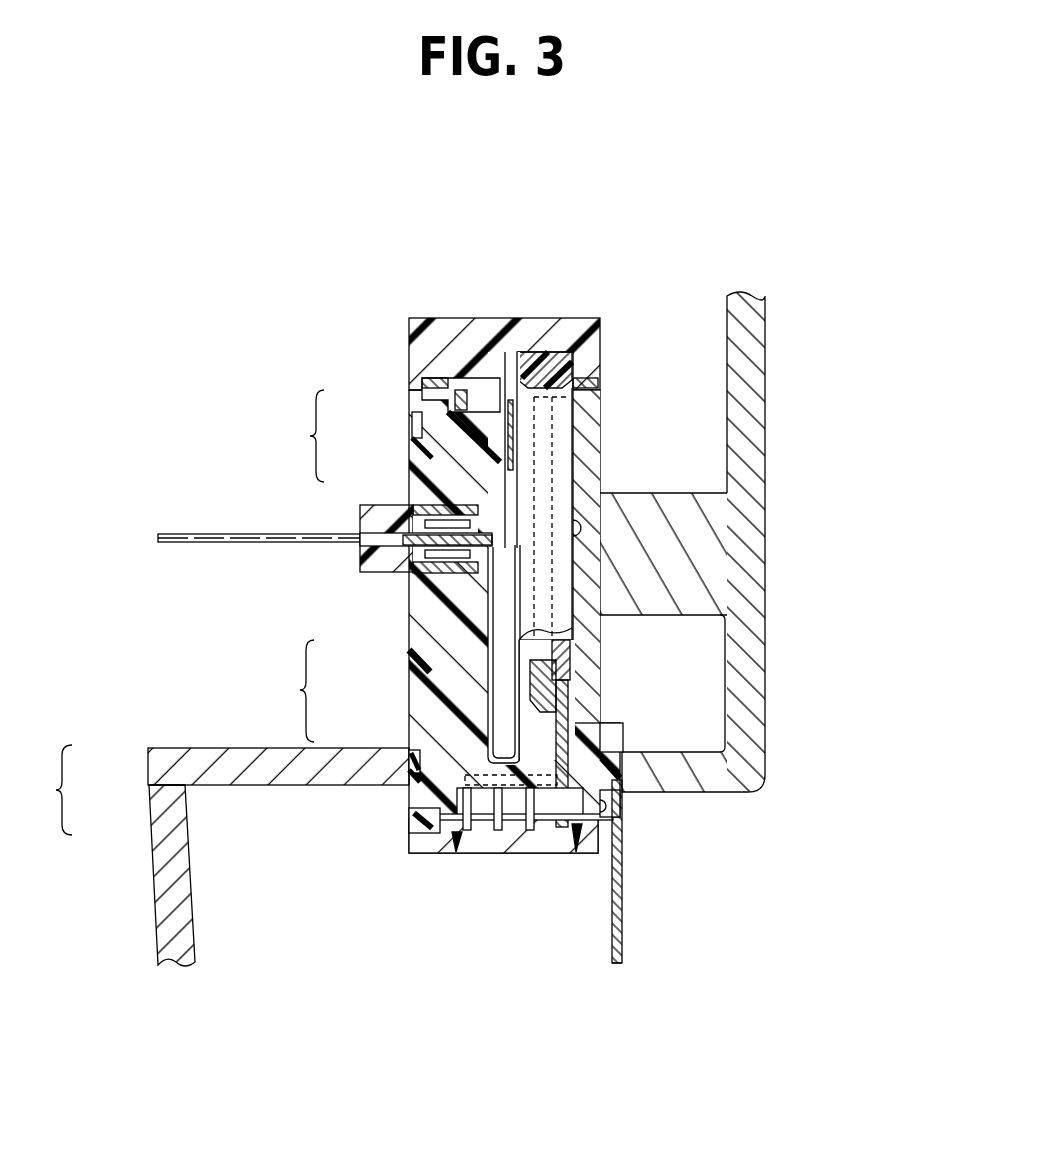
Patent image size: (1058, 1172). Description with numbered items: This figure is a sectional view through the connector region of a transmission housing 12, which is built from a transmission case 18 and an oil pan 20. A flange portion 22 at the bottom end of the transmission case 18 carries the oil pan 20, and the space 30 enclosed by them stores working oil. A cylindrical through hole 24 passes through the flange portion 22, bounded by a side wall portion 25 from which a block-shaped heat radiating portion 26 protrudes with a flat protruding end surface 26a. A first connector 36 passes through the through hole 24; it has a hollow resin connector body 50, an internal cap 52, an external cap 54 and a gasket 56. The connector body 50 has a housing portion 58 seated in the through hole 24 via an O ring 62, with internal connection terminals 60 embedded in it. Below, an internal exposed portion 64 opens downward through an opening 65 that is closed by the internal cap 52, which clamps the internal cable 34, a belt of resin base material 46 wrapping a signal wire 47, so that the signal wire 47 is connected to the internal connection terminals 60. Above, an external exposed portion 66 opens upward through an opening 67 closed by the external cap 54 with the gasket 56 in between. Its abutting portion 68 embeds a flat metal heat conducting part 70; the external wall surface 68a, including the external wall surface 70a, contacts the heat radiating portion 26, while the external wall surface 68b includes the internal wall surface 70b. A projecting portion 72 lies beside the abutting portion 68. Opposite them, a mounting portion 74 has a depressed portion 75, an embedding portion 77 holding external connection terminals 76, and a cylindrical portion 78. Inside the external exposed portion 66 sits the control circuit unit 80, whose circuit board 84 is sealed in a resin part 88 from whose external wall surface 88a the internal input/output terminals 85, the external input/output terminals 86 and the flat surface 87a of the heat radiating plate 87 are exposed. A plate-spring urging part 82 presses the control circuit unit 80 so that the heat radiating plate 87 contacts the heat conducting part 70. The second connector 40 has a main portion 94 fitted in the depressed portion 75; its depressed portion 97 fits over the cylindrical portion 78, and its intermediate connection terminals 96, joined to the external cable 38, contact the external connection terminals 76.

The housing 12 is at (44, 790).
The transmission case 18 is at (160, 772).
The oil pan 20 is at (168, 810).
The flange portion 22 is at (703, 778).
The through hole 24 is at (615, 800).
The side wall portion 25 is at (760, 412).
The heat radiating portion 26 is at (682, 497).
The protruding end surface 26a is at (602, 478).
The space 30 is at (257, 820).
The internal cable 34 is at (573, 835).
The first connector 36 is at (596, 314).
The external cable 38 is at (198, 525).
The second connector 40 is at (350, 515).
The base material 46 is at (625, 882).
The signal wire 47 is at (612, 928).
The connector body 50 is at (290, 691).
The internal cap 52 is at (409, 840).
The external cap 54 is at (425, 345).
The gasket 56 is at (410, 366).
The housing portion 58 is at (408, 775).
The internal connection terminals 60 is at (498, 835).
The O ring 62 is at (628, 775).
The internal exposed portion 64 is at (409, 802).
The opening 65 is at (462, 840).
The external exposed portion 66 is at (412, 657).
The opening 67 is at (505, 395).
The abutting portion 68 is at (605, 395).
The external wall surface 68a is at (667, 326).
The external wall surface 68b is at (885, 487).
The heat conducting part 70 is at (600, 437).
The external wall surface 70a is at (606, 422).
The internal wall surface 70b is at (568, 532).
The projecting portion 72 is at (613, 736).
The mounting portion 74 is at (295, 436).
The depressed portion 75 is at (420, 522).
The external connection terminals 76 is at (480, 838).
The embedding portion 77 is at (432, 413).
The cylindrical portion 78 is at (435, 452).
The control circuit unit 80 is at (543, 348).
The urging part 82 is at (482, 395).
The circuit board 84 is at (556, 637).
The internal input/output terminals 85 is at (566, 698).
The external input/output terminals 86 is at (490, 600).
The heat radiating plate 87 is at (550, 658).
The flat surface 87a is at (565, 630).
The resin part 88 is at (560, 684).
The external wall surface 88a is at (836, 581).
The main portion 94 is at (408, 545).
The intermediate connection terminals 96 is at (415, 538).
The depressed portion 97 is at (430, 575).